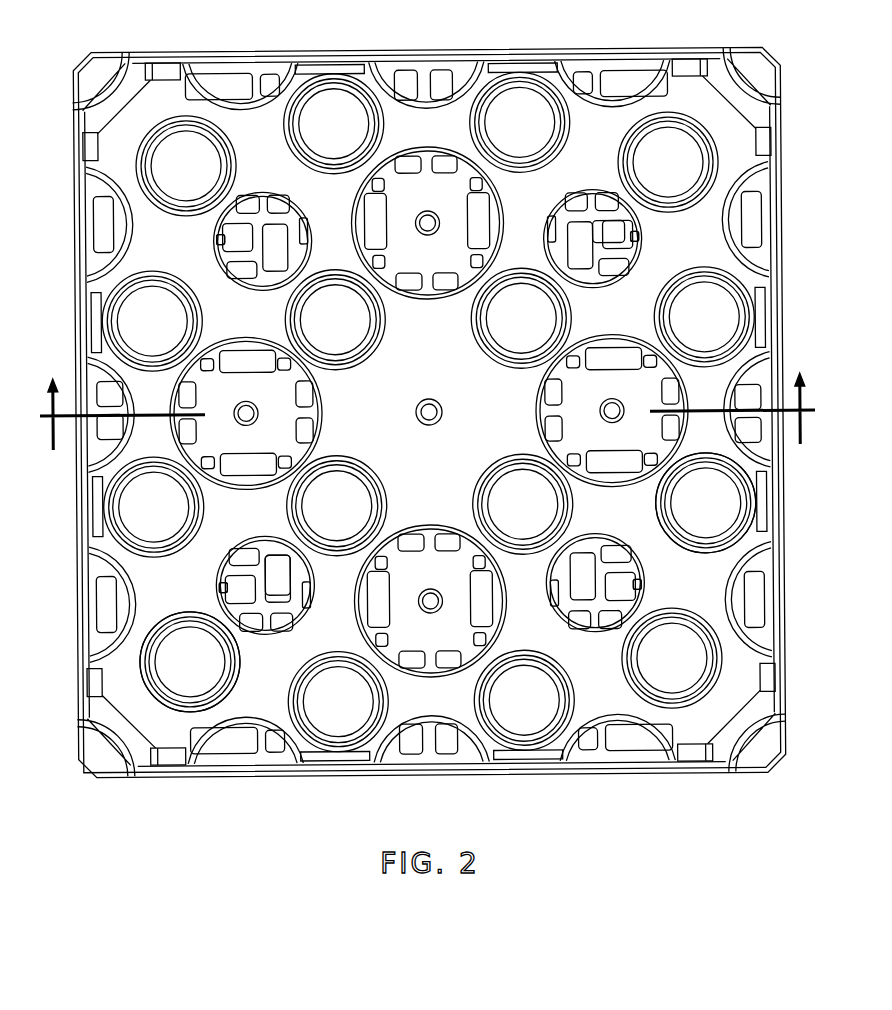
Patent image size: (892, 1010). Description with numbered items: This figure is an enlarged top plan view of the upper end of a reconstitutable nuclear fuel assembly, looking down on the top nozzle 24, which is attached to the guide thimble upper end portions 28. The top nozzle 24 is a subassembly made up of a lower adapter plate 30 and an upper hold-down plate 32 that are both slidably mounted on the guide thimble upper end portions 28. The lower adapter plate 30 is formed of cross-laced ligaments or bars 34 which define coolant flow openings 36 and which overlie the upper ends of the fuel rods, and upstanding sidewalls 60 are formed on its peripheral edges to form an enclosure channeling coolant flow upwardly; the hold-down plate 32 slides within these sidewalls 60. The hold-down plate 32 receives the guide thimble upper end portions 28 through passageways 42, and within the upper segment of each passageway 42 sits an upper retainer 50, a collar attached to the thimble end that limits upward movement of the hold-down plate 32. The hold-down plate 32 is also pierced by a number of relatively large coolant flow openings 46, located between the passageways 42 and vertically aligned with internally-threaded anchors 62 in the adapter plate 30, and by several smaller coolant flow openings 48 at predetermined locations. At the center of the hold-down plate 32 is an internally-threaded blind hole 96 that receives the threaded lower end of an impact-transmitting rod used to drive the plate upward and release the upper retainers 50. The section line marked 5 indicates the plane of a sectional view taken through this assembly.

The top nozzle 24 is at (398, 50).
The guide thimble upper end portion 28 is at (222, 150).
The lower adapter plate 30 is at (755, 630).
The upper hold-down plate 32 is at (712, 247).
The cross-laced ligaments or bars 34 is at (112, 263).
The coolant flow openings 36 is at (630, 232).
The passageways 42 is at (192, 708).
The large coolant flow openings 46 is at (440, 298).
The smaller coolant flow openings 48 is at (220, 238).
The upper retainer 50 is at (157, 137).
The upstanding sidewalls 60 is at (74, 538).
The internally-threaded anchors 62 is at (425, 210).
The internally-threaded blind hole 96 is at (420, 404).
The section line 5- 5 is at (428, 425).